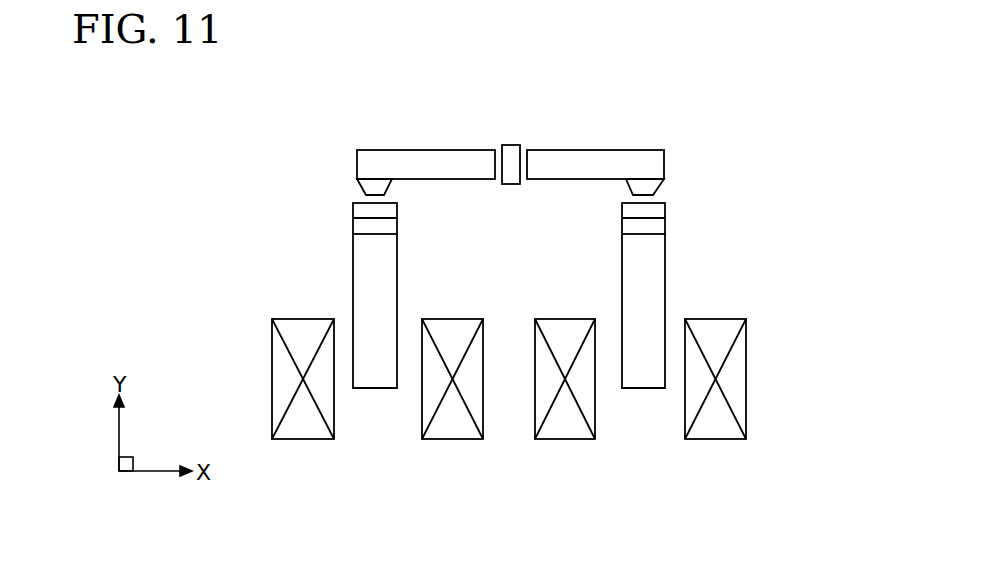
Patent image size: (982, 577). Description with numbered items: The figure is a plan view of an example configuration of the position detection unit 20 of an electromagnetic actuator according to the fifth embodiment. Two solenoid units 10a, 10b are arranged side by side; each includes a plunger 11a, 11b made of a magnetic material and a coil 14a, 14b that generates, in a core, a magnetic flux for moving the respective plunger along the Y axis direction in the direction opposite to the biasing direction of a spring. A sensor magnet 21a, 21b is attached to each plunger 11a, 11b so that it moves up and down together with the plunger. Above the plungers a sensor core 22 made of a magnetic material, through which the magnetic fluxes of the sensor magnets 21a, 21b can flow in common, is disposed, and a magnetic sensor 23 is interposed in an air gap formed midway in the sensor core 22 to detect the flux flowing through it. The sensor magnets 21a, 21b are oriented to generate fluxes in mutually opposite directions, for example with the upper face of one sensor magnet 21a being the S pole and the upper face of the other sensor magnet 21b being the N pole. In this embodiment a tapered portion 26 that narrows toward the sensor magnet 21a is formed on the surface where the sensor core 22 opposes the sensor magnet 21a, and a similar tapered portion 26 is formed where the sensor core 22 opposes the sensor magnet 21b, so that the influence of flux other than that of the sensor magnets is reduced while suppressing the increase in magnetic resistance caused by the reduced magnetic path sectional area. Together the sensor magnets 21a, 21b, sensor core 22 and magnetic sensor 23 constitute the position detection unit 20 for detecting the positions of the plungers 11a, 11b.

The position detection unit 20 is at (369, 132).
The sensor core 22 is at (583, 150).
The magnetic sensor 23 is at (511, 145).
The tapered portion 26 is at (363, 187).
The sensor magnet 21a is at (353, 225).
The sensor magnet 21b is at (665, 220).
The plunger 11a is at (376, 382).
The plunger 11b is at (642, 382).
The solenoid unit 10a is at (254, 352).
The solenoid unit 10b is at (762, 346).
The coil 14a is at (305, 430).
The coil 14b is at (577, 430).